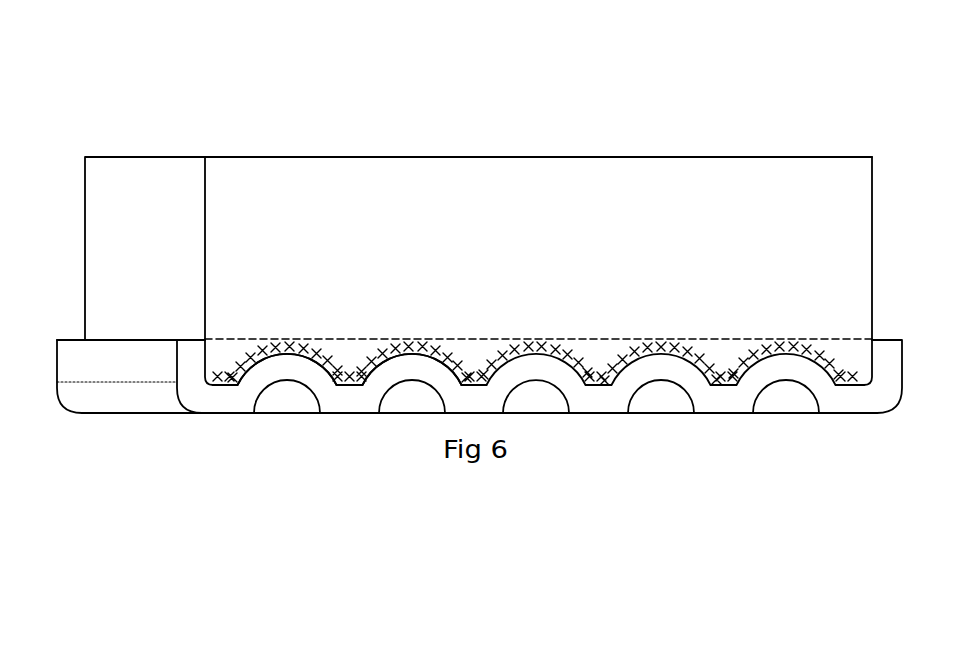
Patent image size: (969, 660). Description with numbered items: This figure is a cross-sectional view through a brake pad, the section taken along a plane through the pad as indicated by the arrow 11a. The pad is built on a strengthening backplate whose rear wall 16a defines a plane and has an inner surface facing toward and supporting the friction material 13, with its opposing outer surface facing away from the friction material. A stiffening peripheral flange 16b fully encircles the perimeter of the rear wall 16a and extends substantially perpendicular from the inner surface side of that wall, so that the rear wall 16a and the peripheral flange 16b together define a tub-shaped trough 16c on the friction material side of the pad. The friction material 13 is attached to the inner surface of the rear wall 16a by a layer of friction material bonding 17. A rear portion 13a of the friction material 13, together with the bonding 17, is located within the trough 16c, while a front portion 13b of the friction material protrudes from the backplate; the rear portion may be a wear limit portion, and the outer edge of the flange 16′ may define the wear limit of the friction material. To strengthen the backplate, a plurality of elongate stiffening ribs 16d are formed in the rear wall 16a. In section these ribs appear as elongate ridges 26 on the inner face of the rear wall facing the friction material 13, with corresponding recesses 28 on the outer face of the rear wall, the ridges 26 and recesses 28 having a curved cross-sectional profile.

The assembly direction arrow 11a is at (403, 473).
The friction material 13 is at (617, 252).
The rear portion of the friction material 13a is at (740, 352).
The front portion of the friction material 13b is at (712, 205).
The flange 16′ is at (133, 338).
The rear wall 16a is at (603, 413).
The stiffening peripheral flange 16b is at (68, 362).
The trough 16c is at (473, 363).
The elongate stiffening ribs 16d is at (313, 372).
The friction material bonding 17 is at (233, 372).
The elongate ridges 26 is at (278, 342).
The recesses 28 is at (290, 400).